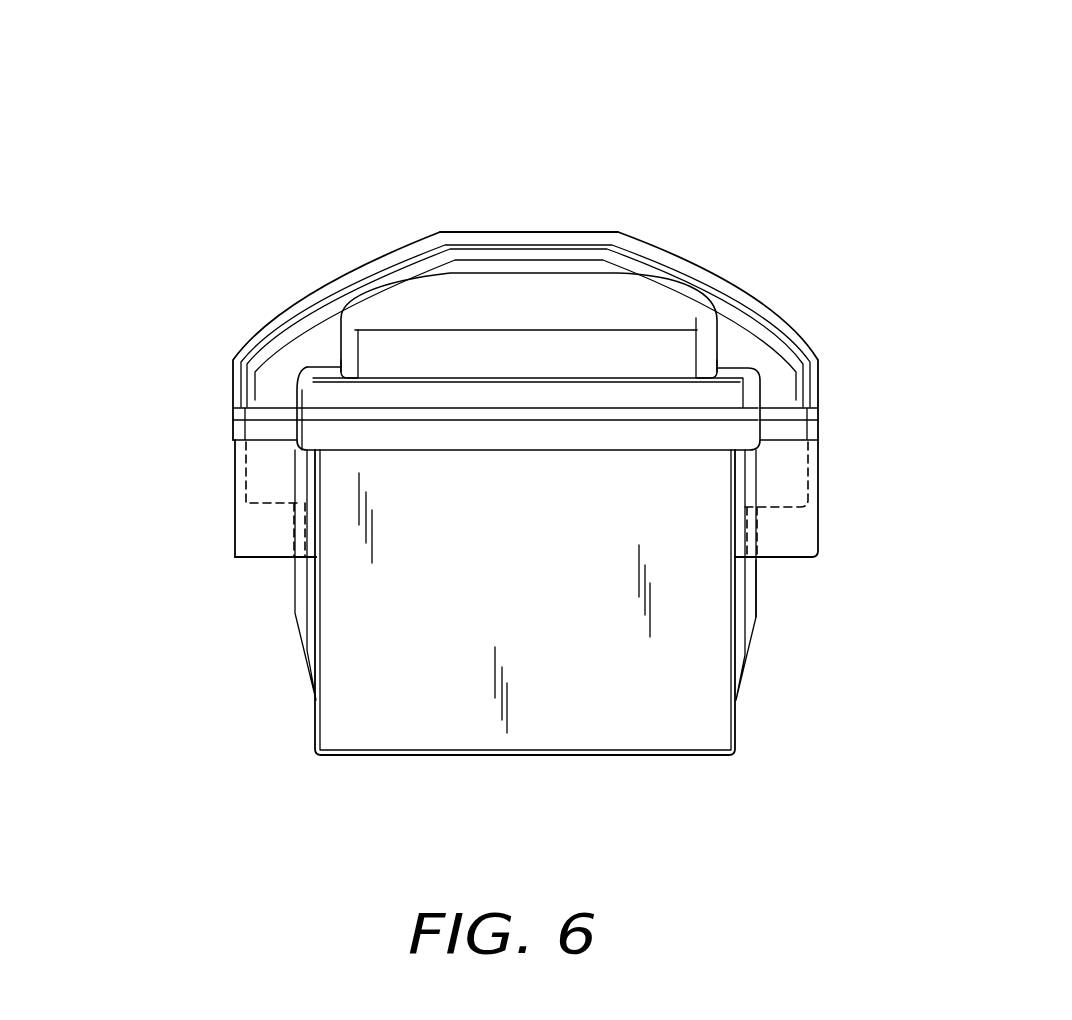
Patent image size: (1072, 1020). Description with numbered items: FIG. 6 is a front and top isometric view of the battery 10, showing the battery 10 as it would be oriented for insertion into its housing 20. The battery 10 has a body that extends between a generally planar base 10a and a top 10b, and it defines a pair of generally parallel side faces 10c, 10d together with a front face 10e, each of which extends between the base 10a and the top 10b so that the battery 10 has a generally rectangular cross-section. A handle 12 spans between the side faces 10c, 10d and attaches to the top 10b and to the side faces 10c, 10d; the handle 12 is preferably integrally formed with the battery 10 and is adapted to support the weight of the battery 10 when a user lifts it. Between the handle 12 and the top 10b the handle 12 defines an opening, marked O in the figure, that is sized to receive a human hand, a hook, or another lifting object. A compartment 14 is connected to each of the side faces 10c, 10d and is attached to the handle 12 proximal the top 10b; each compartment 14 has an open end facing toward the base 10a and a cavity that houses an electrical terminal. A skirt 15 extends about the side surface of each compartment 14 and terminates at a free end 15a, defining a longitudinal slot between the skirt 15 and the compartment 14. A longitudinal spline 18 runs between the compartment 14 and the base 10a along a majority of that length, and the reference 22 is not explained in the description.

The battery 10 is at (906, 122).
The base 10a is at (550, 758).
The top 10b is at (643, 358).
The side face 10c is at (735, 727).
The side face 10d is at (313, 723).
The front face 10e is at (549, 679).
The handle 12 is at (673, 252).
The compartment 14 is at (265, 482).
The skirt 15 is at (235, 508).
The free end 15a is at (263, 557).
The longitudinal spline 18 is at (760, 590).
The housing 20 is at (498, 290).
The container rim 22 is at (547, 342).